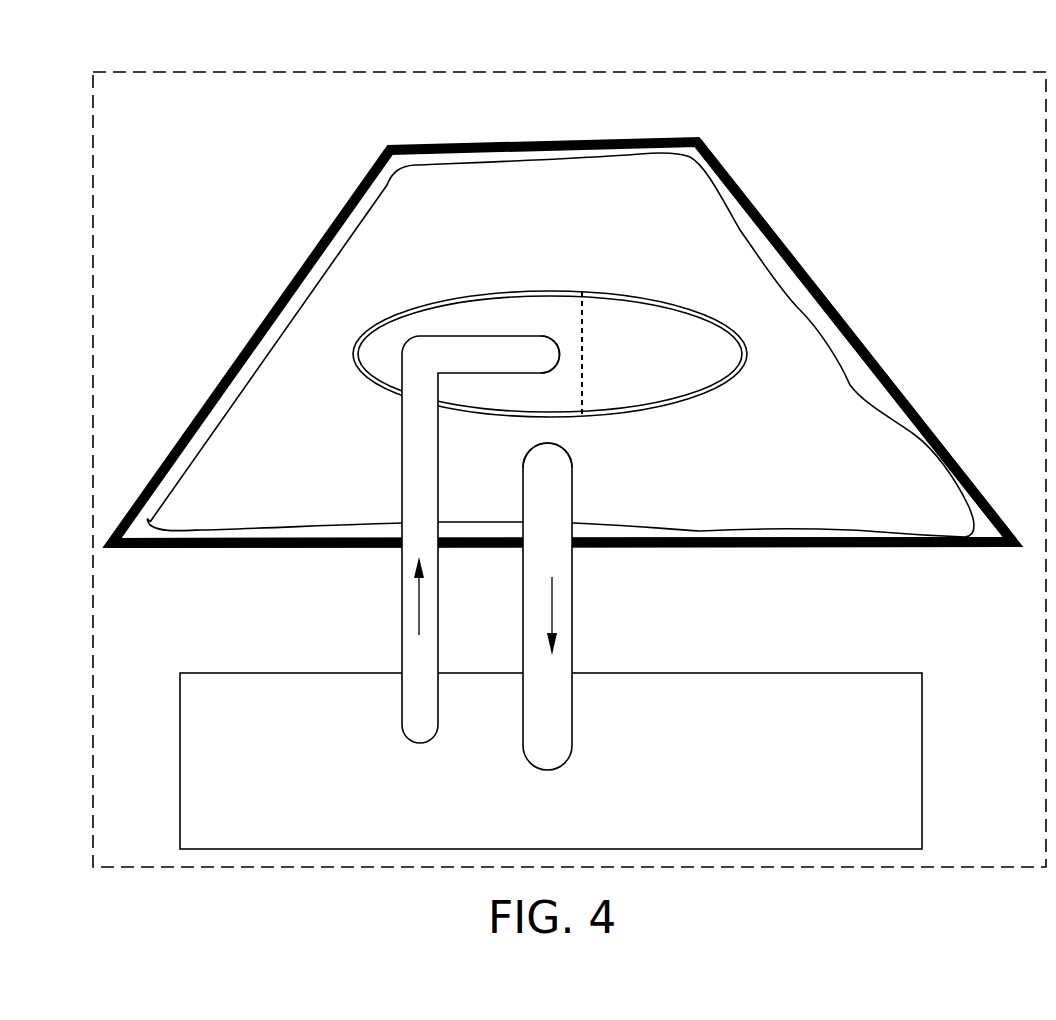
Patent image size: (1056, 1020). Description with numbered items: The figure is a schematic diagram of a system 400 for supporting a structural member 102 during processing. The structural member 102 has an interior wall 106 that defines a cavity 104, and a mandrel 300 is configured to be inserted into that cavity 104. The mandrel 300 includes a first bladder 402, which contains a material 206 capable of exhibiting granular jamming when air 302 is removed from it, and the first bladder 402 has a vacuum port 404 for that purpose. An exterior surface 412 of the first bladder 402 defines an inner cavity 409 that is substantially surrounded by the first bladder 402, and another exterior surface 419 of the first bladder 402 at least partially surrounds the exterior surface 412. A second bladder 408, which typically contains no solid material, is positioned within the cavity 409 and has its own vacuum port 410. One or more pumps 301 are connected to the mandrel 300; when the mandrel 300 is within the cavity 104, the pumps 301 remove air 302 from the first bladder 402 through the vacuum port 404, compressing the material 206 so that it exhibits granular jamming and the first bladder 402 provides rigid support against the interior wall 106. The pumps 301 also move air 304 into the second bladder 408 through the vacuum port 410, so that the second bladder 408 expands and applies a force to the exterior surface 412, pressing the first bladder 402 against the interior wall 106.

The system 400 is at (940, 72).
The structural member 102 is at (388, 148).
The cavity 104 is at (833, 348).
The interior wall 106 is at (674, 537).
The material 206 is at (816, 431).
The mandrel 300 is at (744, 246).
The pumps 301 is at (884, 826).
The air 302 is at (552, 602).
The air 304 is at (419, 602).
The first bladder 402 is at (217, 527).
The vacuum port 404 is at (572, 462).
The second bladder 408 is at (622, 300).
The cavity 409 is at (584, 357).
The vacuum port 410 is at (558, 338).
The exterior surface 412 is at (490, 292).
The exterior surface 419 is at (776, 547).